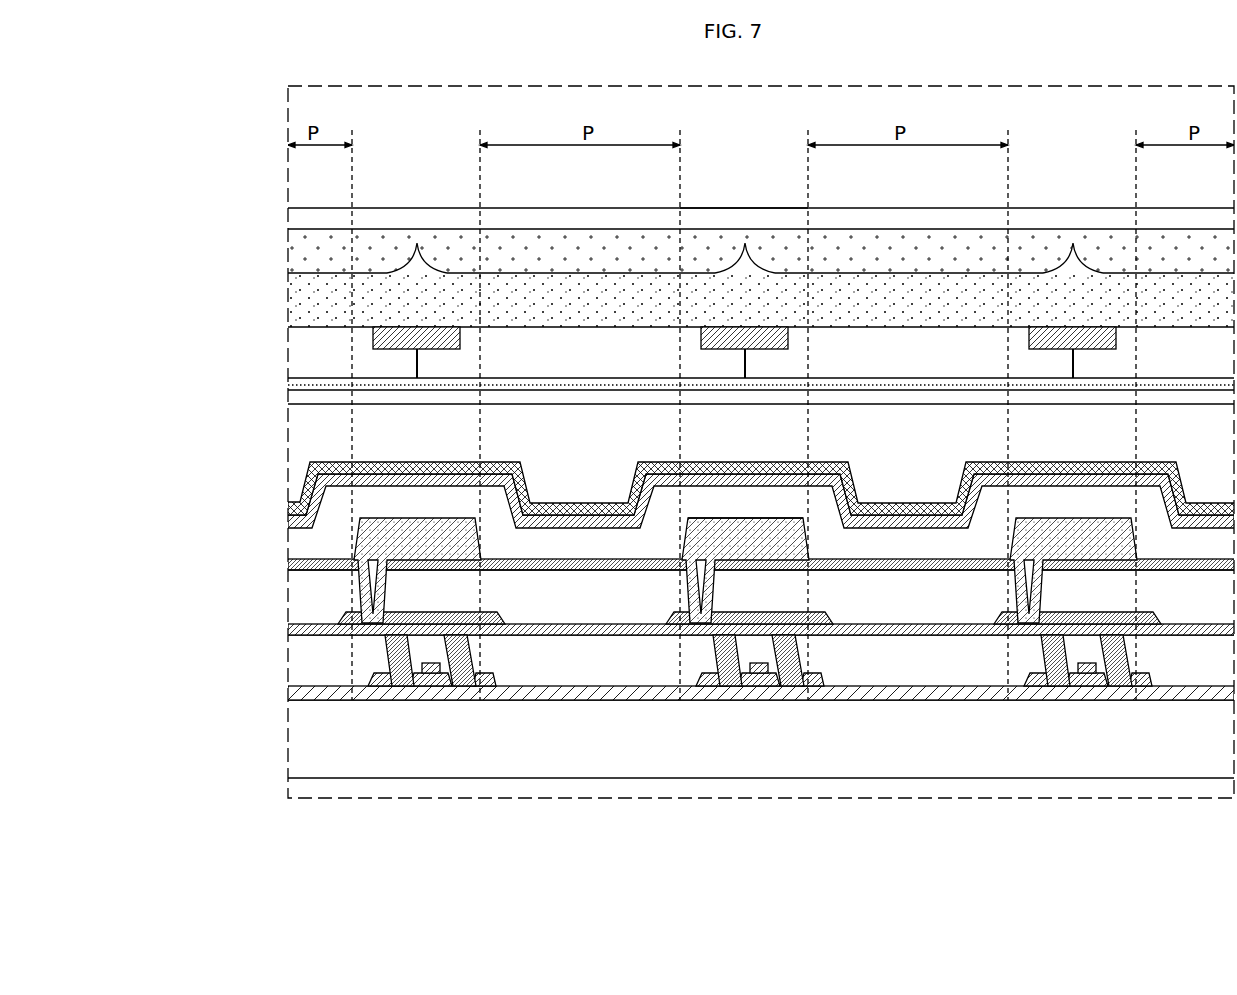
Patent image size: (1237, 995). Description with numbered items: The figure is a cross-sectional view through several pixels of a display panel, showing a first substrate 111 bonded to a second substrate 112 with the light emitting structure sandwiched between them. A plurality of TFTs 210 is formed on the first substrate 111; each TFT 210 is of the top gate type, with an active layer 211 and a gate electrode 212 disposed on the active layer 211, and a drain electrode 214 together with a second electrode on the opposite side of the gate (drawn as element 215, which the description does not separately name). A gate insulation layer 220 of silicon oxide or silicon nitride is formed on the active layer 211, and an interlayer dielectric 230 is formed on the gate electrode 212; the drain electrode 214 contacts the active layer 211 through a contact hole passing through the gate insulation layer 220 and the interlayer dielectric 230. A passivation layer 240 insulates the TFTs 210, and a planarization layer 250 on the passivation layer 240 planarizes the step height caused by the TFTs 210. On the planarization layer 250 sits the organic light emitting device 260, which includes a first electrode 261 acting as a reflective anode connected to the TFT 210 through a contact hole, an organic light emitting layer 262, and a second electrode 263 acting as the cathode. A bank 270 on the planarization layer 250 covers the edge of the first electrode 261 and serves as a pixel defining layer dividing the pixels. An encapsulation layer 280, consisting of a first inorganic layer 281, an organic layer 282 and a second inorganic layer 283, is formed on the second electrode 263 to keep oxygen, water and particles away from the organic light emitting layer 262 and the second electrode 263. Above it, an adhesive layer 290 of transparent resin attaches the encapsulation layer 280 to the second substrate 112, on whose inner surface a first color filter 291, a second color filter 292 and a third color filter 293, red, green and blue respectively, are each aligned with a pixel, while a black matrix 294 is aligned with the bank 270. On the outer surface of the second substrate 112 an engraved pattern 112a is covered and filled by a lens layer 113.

The first substrate 111 is at (292, 738).
The second substrate 112 is at (290, 291).
The engraved pattern 112a is at (400, 262).
The lens layer 113 is at (445, 330).
The TFT 210 is at (735, 768).
The active layer 211 is at (449, 700).
The gate electrode 212 is at (430, 700).
The drain electrode 214 is at (360, 700).
The drain electrode 215 is at (812, 767).
The gate insulation layer 220 is at (292, 690).
The interlayer dielectric 230 is at (292, 668).
The passivation layer 240 is at (292, 631).
The planarization layer 250 is at (292, 611).
The organic light emitting device 260 is at (699, 570).
The first electrode 261 is at (325, 588).
The organic light emitting layer 262 is at (292, 546).
The second electrode 263 is at (216, 590).
The bank 270 is at (757, 540).
The encapsulation layer 280 is at (699, 459).
The first inorganic layer 281 is at (300, 514).
The organic layer 282 is at (296, 444).
The second inorganic layer 283 is at (727, 403).
The adhesive layer 290 is at (292, 378).
The first color filter 291 is at (323, 353).
The second color filter 292 is at (553, 353).
The third color filter 293 is at (920, 353).
The black matrix 294 is at (768, 332).